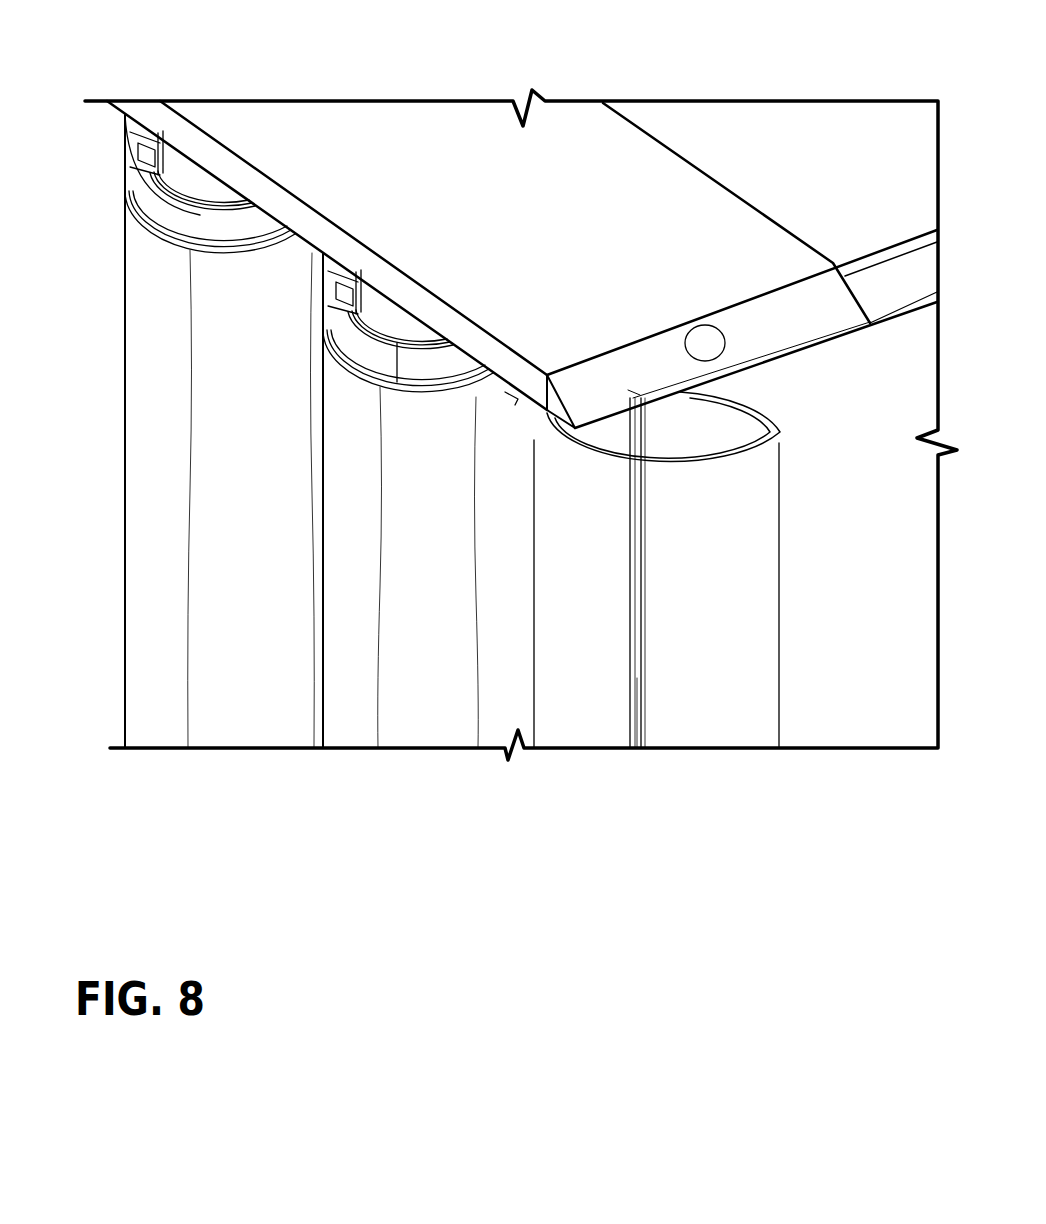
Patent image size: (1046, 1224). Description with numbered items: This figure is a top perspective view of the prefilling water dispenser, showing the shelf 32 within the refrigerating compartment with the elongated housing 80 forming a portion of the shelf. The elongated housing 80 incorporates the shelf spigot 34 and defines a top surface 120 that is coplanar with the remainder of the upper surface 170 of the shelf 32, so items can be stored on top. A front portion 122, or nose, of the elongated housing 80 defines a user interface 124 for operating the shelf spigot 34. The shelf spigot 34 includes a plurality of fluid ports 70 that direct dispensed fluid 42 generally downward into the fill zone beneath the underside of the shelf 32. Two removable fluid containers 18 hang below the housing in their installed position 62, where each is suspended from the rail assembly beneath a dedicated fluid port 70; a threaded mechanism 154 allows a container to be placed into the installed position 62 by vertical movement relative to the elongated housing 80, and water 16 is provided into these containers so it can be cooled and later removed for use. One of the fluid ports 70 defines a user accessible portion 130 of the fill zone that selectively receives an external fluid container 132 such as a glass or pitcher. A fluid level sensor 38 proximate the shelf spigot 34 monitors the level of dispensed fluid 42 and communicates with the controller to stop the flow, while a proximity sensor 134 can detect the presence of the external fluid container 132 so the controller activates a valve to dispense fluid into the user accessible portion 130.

The water 16 is at (640, 435).
The removable fluid container 18 is at (127, 428).
The shelf 32 is at (448, 147).
The shelf spigot 34 is at (297, 210).
The fluid level sensor 38 is at (745, 418).
The dispensed fluid 42 is at (637, 677).
The installed position 62 is at (127, 333).
The fluid port 70 is at (633, 395).
The elongated housing 80 is at (357, 153).
The top surface 120 is at (560, 204).
The front portion 122 is at (802, 307).
The user interface 124 is at (705, 343).
The user accessible portion 130 is at (677, 453).
The external fluid container 132 is at (735, 592).
The proximity sensor 134 is at (520, 397).
The threaded mechanism 154 is at (320, 323).
The upper surface 170 is at (868, 176).